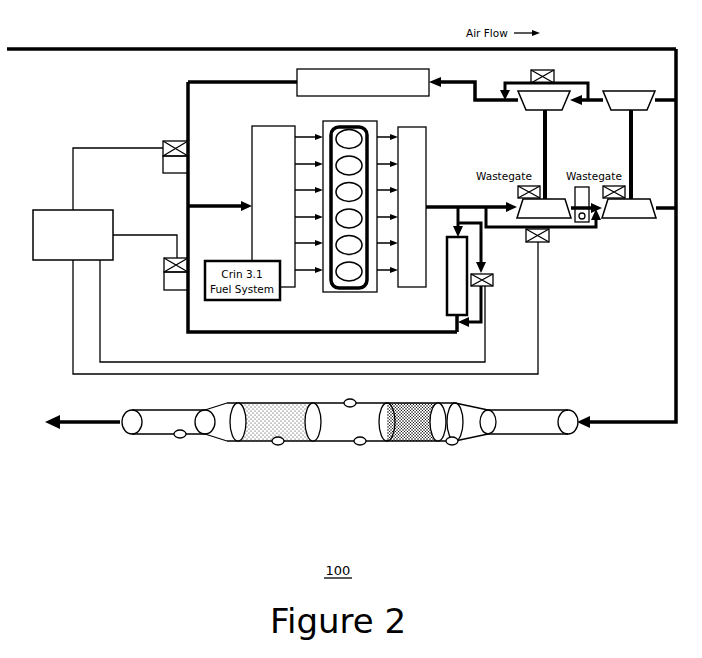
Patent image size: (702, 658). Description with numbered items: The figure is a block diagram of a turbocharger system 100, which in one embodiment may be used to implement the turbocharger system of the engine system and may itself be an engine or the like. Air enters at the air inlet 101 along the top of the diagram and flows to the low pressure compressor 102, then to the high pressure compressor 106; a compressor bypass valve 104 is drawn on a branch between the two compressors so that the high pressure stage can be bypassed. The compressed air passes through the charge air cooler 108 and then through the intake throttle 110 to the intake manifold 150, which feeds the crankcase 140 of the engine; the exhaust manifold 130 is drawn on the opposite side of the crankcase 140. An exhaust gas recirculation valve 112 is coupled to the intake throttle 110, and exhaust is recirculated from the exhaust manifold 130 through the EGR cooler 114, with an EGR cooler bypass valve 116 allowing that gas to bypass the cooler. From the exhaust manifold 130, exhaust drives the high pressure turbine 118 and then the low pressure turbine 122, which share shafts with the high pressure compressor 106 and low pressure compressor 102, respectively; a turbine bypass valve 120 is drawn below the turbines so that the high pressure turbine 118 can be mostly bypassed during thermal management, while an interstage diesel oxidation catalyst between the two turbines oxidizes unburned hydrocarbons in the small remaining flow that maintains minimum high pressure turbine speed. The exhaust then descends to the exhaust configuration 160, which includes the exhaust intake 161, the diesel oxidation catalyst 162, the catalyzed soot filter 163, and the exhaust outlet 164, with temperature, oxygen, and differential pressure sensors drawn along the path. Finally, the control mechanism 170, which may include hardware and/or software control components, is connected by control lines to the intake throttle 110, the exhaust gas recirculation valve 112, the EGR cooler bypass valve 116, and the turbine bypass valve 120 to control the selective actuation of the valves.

The turbocharger system 100 is at (53, 33).
The air inlet 101 is at (100, 48).
The low pressure compressor 102 is at (628, 91).
The compressor bypass valve 104 is at (548, 70).
The high pressure compressor 106 is at (536, 111).
The charge air cooler 108 is at (414, 69).
The intake throttle 110 is at (175, 141).
The exhaust gas recirculation valve 112 is at (164, 264).
The EGR cooler 114 is at (447, 301).
The EGR cooler bypass valve 116 is at (493, 280).
The high pressure turbine 118 is at (553, 199).
The turbine bypass valve 120 is at (551, 237).
The low pressure turbine 122 is at (641, 199).
The exhaust manifold 130 is at (413, 127).
The crankcase 140 is at (348, 121).
The intake manifold 150 is at (276, 126).
The exhaust configuration 160 is at (341, 432).
The exhaust intake 161 is at (540, 408).
The diesel oxidation catalyst 162 is at (412, 446).
The catalyzed soot filter 163 is at (254, 446).
The exhaust outlet 164 is at (122, 428).
The control mechanism 170 is at (45, 210).